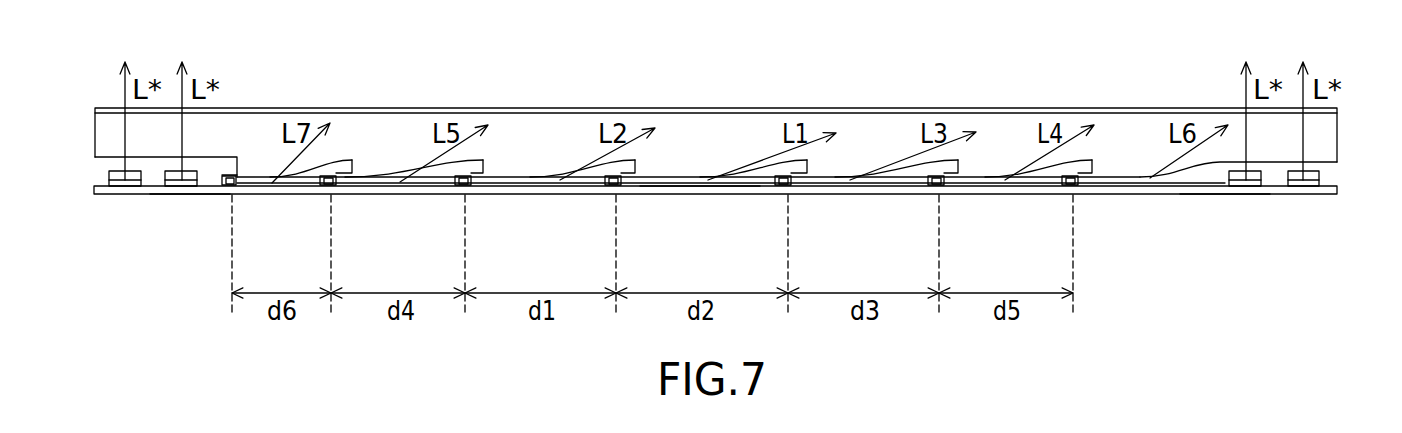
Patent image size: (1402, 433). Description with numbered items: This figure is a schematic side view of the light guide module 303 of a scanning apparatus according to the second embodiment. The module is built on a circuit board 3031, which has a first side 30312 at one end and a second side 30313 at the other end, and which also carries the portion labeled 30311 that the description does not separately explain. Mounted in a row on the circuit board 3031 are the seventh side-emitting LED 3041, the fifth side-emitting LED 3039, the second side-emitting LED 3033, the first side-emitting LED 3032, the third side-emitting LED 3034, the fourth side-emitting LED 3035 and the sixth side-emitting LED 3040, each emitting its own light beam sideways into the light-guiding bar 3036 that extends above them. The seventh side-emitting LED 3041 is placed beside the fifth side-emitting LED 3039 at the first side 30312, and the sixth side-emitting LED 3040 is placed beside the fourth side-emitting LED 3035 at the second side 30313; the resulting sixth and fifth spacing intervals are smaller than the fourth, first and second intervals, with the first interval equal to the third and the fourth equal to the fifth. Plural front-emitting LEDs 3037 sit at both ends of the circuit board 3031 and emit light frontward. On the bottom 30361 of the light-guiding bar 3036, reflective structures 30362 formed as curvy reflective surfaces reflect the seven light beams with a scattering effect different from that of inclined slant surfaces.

The light guide module 303 is at (1118, 65).
The circuit board 3031 is at (1160, 190).
The first surface of substrate 30311 is at (707, 192).
The first side of the circuit board 30312 is at (193, 192).
The second side of the circuit board 30313 is at (1223, 192).
The first side-emitting LED 3032 is at (633, 190).
The second side-emitting LED 3033 is at (478, 190).
The third side-emitting LED 3034 is at (803, 190).
The fourth side-emitting LED 3035 is at (953, 190).
The light-guiding bar 3036 is at (738, 128).
The bottom of the light-guiding bar 30361 is at (248, 167).
The reflective structures 30362 is at (293, 182).
The front-emitting LEDs 3037 is at (113, 187).
The fifth side-emitting LED 3039 is at (345, 190).
The sixth side-emitting LED 3040 is at (1092, 190).
The seventh side-emitting LED 3041 is at (247, 192).